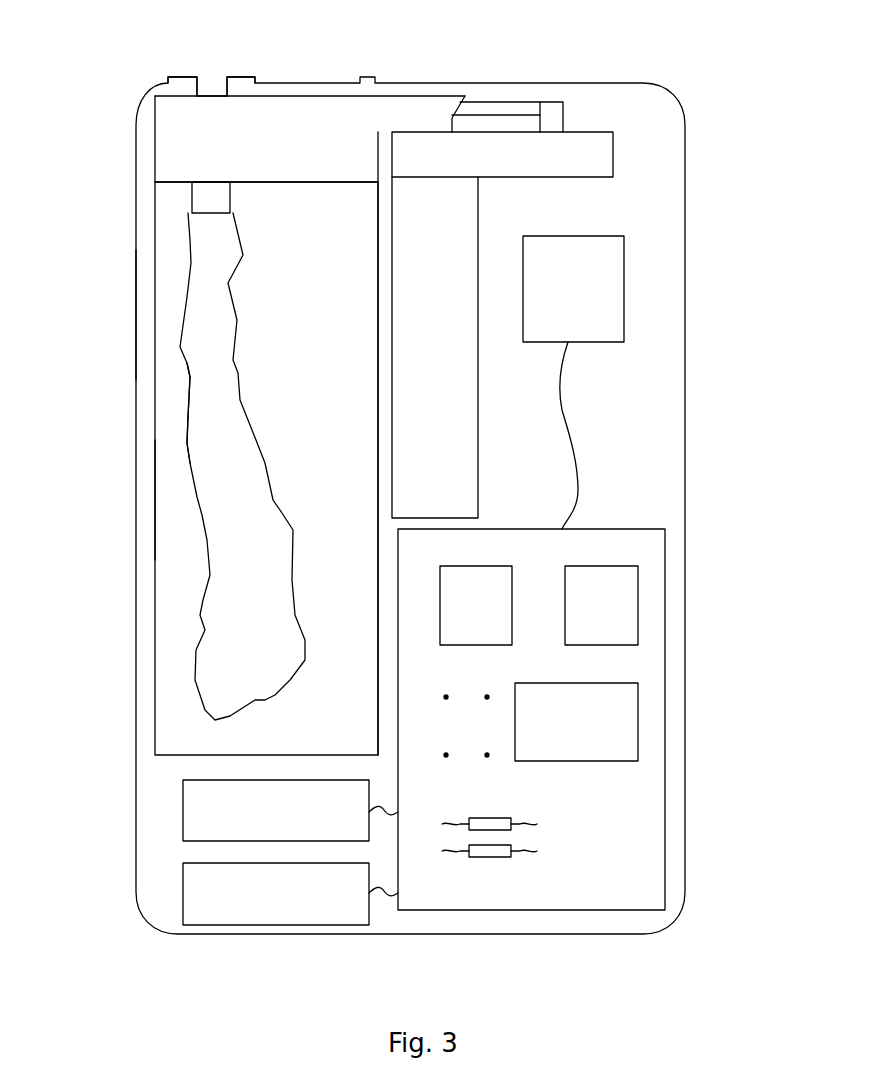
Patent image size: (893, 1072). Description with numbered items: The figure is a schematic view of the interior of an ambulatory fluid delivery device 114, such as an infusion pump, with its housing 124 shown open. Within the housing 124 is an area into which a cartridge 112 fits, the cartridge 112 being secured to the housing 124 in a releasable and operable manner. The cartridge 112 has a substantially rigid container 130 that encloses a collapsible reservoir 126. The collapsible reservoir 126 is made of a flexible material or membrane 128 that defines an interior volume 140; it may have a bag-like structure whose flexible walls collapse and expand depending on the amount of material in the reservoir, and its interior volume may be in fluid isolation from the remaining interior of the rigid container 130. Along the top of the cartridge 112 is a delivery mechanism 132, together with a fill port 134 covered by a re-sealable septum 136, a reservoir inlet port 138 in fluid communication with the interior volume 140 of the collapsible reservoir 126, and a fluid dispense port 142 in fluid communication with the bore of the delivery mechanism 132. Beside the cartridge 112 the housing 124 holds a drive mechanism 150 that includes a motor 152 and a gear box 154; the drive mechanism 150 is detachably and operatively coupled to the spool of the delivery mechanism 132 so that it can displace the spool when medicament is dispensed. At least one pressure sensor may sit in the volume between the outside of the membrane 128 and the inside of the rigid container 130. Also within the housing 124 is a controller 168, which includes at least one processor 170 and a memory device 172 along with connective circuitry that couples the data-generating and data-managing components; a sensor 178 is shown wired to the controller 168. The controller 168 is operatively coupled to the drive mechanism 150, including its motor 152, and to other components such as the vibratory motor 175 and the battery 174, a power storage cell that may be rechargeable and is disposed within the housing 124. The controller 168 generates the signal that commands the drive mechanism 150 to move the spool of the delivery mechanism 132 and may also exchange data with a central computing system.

The ambulatory fluid delivery device 114 is at (673, 78).
The delivery mechanism 132 is at (305, 123).
The re-sealable septum 136 is at (177, 86).
The fluid dispense port 142 is at (247, 86).
The fill port 134 is at (175, 105).
The reservoir inlet port 138 is at (192, 205).
The housing 124 is at (137, 312).
The interior volume 140 is at (207, 383).
The flexible material or membrane 128 is at (188, 447).
The cartridge 112 is at (175, 510).
The collapsible reservoir 126 is at (233, 588).
The substantially rigid container 130 is at (150, 692).
The drive mechanism 150 is at (578, 118).
The gear box 154 is at (595, 145).
The motor 152 is at (457, 205).
The sensor 178 is at (618, 283).
The controller 168 is at (650, 642).
The processor 170 is at (490, 580).
The memory device 172 is at (615, 715).
The vibratory motor 175 is at (200, 813).
The battery 174 is at (200, 893).